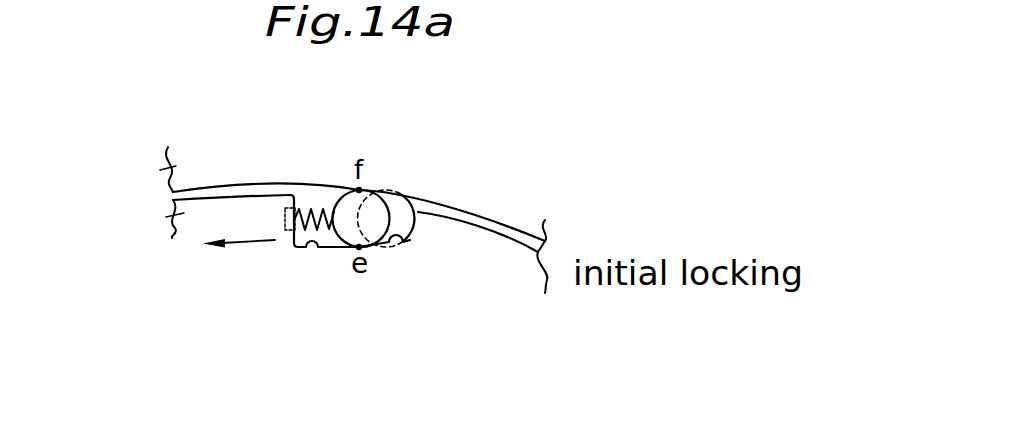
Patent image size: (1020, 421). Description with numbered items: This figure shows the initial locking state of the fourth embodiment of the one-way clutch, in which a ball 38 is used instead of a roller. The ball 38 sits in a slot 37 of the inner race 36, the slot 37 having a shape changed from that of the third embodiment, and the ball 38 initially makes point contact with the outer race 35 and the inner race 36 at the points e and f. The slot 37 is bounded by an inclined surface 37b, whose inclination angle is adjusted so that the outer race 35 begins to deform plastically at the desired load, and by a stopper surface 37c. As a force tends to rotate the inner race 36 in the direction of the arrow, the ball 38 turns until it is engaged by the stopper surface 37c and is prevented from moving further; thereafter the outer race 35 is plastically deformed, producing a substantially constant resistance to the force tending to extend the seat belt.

The outer race 35 is at (168, 172).
The inner race 36 is at (168, 220).
The slot 37 is at (322, 248).
The inclined surface 37b is at (403, 243).
The stopper surface 37c is at (398, 193).
The ball 38 is at (338, 247).